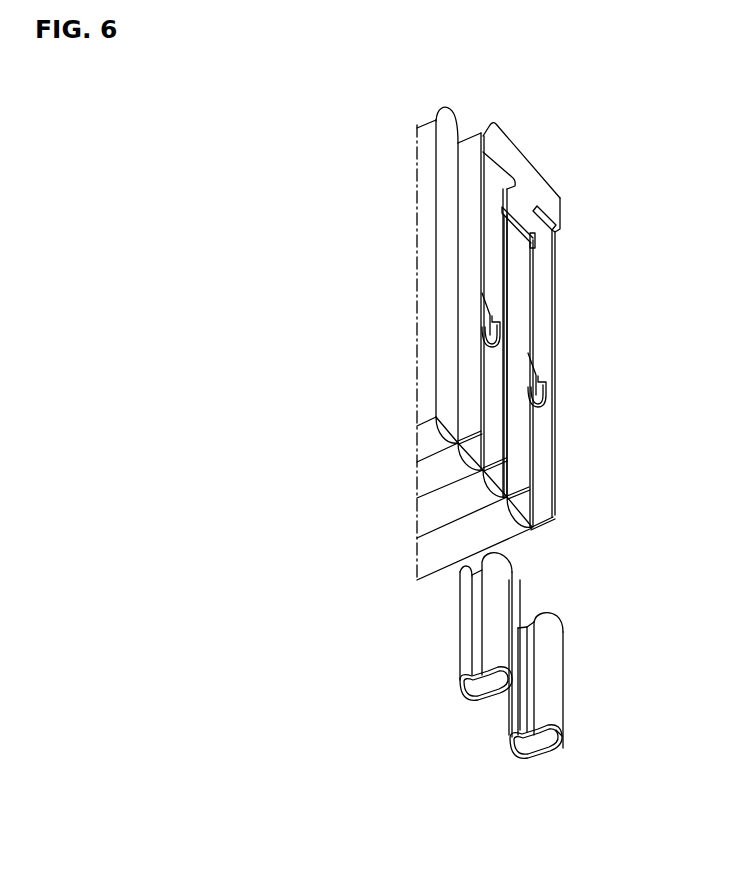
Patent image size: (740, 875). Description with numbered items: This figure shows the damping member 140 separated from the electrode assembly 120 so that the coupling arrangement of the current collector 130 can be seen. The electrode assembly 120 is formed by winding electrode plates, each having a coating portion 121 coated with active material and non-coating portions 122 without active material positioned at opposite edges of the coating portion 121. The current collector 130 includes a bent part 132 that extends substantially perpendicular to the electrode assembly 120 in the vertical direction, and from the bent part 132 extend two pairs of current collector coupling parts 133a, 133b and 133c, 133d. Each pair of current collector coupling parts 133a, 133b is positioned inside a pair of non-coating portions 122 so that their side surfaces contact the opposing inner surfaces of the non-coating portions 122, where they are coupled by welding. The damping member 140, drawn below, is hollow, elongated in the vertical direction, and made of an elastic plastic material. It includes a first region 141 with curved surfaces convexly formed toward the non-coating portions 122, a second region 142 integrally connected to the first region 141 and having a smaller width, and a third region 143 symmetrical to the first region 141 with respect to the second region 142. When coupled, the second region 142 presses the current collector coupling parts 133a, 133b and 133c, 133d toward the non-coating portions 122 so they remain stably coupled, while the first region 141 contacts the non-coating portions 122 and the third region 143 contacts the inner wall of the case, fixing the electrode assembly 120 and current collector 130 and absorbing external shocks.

The electrode assembly 120 is at (528, 353).
The coating portion 121 is at (520, 508).
The non-coating portion 122 is at (545, 460).
The current collector 130 is at (486, 299).
The bent part 132 is at (556, 208).
The current collector coupling part 133a is at (554, 233).
The current collector coupling part 133b is at (534, 292).
The current collector coupling part 133c is at (485, 208).
The current collector coupling part 133d is at (500, 262).
The damping member 140 is at (567, 685).
The first region 141 is at (515, 758).
The second region 142 is at (545, 759).
The third region 143 is at (565, 738).